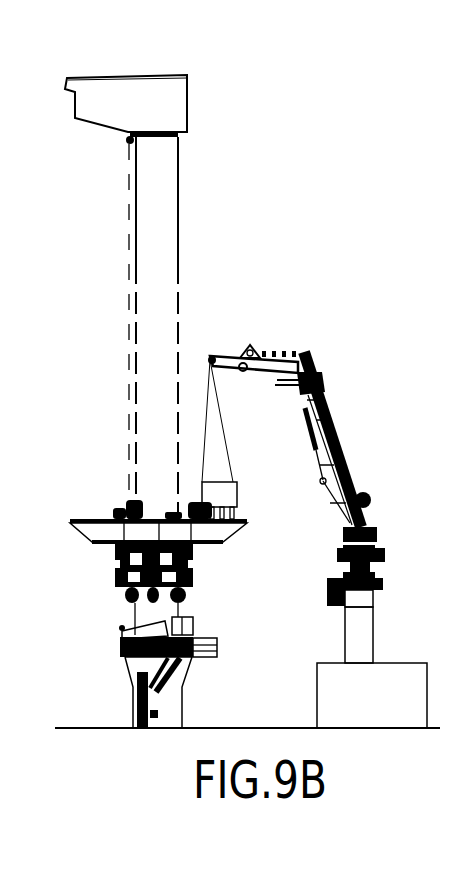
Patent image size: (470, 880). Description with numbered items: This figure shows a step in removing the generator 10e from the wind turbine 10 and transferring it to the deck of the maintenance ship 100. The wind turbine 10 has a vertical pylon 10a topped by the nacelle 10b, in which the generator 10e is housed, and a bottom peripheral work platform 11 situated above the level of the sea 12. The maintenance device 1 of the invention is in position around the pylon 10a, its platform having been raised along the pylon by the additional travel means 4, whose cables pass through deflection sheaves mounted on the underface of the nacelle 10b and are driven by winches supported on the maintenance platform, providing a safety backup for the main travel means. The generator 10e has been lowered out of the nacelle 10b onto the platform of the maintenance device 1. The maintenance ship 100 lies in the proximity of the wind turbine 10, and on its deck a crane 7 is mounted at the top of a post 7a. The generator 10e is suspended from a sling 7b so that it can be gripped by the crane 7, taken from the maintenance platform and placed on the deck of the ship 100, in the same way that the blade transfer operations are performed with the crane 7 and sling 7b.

The maintenance device 1 is at (100, 555).
The additional travel means 4 is at (127, 229).
The crane 7 is at (312, 504).
The post 7a is at (367, 636).
The sling 7b is at (223, 422).
The wind turbine 10 is at (178, 295).
The pylon 10a is at (163, 237).
The nacelle 10b is at (167, 93).
The generator 10e is at (225, 492).
The bottom peripheral work platform 11 is at (121, 647).
The sea 12 is at (252, 728).
The maintenance ship 100 is at (392, 707).